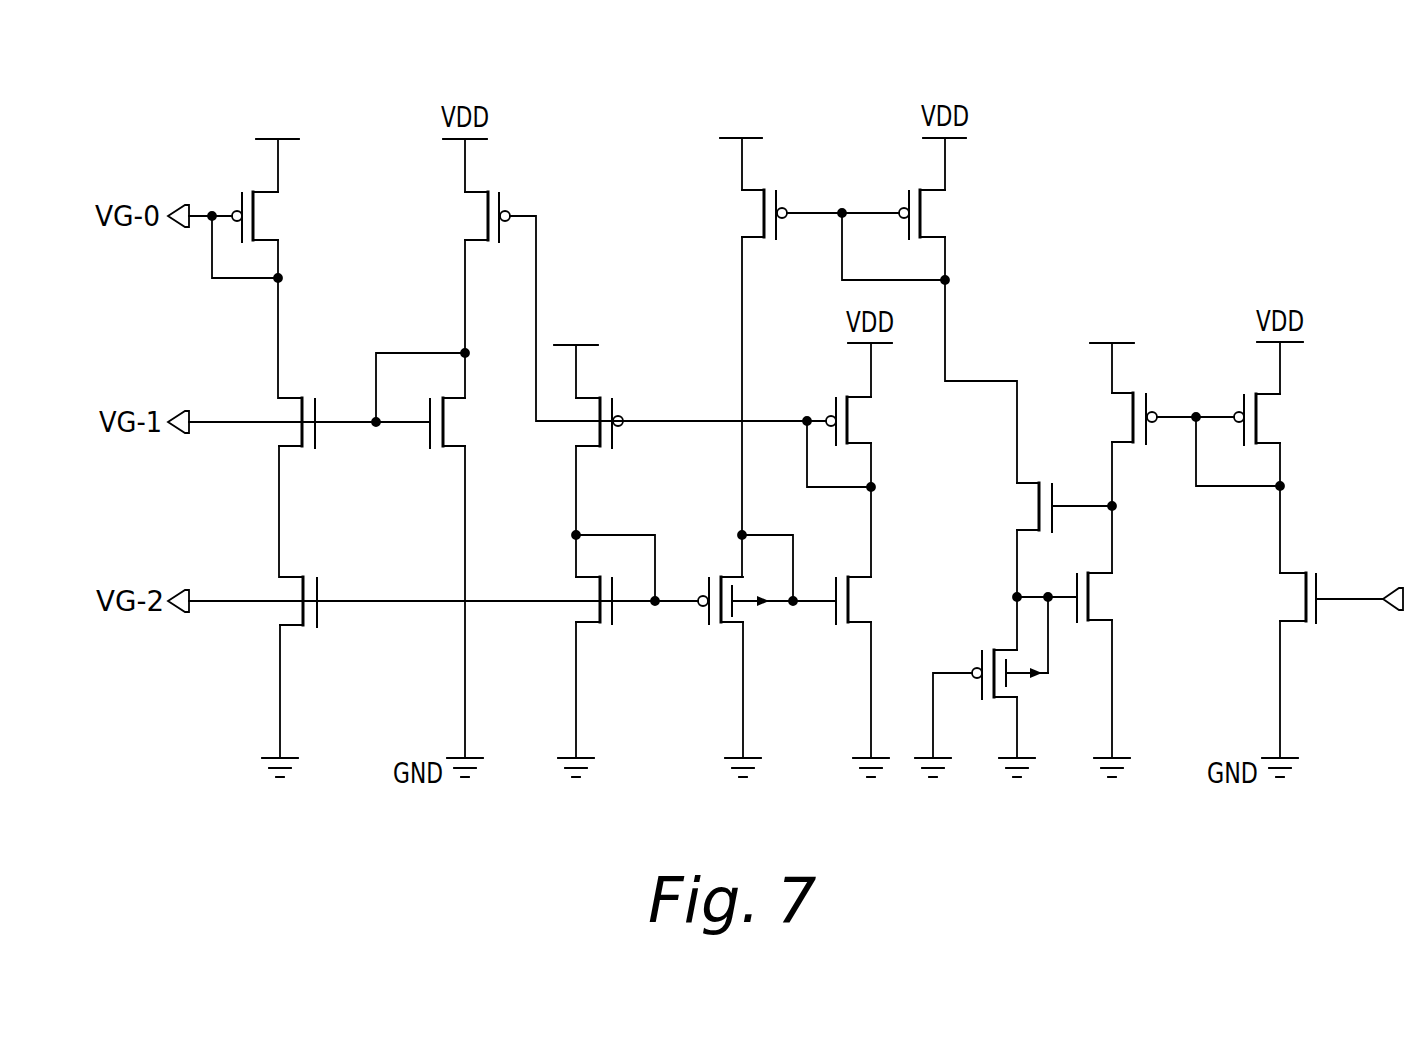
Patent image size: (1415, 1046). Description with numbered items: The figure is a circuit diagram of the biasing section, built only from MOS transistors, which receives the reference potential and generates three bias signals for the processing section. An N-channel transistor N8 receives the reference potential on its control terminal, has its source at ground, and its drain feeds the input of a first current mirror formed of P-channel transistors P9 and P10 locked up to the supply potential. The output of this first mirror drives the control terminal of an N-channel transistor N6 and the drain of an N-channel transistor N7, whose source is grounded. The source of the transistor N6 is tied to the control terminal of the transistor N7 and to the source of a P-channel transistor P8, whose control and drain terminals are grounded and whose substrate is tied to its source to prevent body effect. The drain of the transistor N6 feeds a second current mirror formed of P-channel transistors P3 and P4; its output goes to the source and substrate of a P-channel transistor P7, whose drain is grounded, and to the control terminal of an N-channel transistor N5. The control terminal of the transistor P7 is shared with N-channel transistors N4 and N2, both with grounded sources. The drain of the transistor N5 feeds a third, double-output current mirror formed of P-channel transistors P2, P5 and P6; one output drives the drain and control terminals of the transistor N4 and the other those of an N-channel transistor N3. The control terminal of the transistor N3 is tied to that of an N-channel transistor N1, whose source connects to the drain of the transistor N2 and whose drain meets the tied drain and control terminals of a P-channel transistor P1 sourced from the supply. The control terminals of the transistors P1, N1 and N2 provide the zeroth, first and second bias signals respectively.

The P-channel transistor P1 is at (270, 217).
The P-channel transistor P2 is at (471, 217).
The P-channel transistor P3 is at (747, 214).
The P-channel transistor P4 is at (938, 214).
The P-channel transistor P5 is at (578, 430).
The P-channel transistor P6 is at (864, 421).
The P-channel transistor P7 is at (740, 610).
The P-channel transistor P8 is at (1015, 684).
The P-channel transistor P9 is at (1117, 418).
The P-channel transistor P10 is at (1279, 419).
The N-channel transistor N1 is at (277, 431).
The N-channel transistor N2 is at (277, 610).
The N-channel transistor N3 is at (464, 423).
The N-channel transistor N4 is at (573, 610).
The N-channel transistor N5 is at (870, 600).
The N-channel transistor N6 is at (1016, 507).
The N-channel transistor N7 is at (1111, 597).
The N-channel transistor N8 is at (1280, 598).